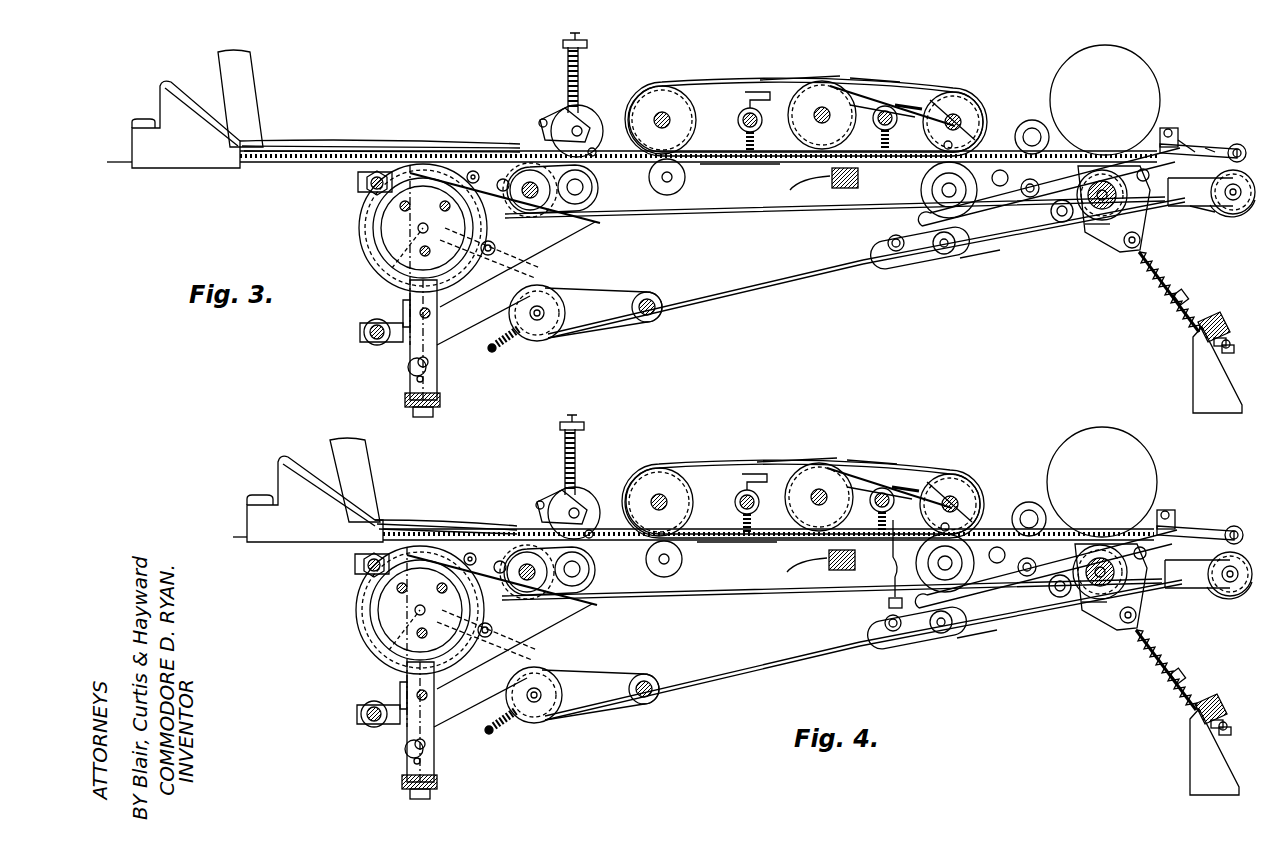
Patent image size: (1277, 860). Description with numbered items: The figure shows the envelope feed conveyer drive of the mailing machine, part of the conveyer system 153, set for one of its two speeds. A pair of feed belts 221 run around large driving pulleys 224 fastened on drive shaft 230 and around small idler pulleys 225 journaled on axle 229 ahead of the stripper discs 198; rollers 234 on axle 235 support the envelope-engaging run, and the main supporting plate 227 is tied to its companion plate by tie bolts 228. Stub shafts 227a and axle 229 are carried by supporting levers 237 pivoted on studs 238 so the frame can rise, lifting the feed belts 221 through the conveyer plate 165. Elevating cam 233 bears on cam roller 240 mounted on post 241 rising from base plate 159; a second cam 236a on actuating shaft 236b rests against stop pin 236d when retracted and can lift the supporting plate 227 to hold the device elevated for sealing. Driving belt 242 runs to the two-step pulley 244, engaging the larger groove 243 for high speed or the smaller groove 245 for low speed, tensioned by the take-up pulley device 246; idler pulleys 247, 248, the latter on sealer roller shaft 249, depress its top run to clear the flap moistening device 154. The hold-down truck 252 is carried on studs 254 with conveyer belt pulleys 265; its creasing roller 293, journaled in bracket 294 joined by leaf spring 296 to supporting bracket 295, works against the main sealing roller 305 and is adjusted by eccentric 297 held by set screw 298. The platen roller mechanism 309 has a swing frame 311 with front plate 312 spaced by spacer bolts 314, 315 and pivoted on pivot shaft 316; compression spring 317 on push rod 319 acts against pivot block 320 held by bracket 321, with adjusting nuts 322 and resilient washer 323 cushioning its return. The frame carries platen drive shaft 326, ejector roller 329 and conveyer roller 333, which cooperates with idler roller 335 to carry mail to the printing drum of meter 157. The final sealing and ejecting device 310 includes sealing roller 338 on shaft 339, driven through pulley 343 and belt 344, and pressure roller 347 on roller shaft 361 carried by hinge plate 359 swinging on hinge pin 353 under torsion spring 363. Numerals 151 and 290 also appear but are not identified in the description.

In FIG. 3, the sheet feeding mechanism 151 is at (412, 110).
In FIG. 4, the sheet feeding mechanism 151 is at (693, 459).
In FIG. 3, the conveyer system 153 is at (745, 80).
In FIG. 4, the conveyer system 153 is at (803, 462).
In FIG. 3, the envelope flap moistening device 154 is at (860, 190).
In FIG. 4, the envelope flap moistening device 154 is at (833, 584).
In FIG. 3, the meter 157 is at (1147, 66).
In FIG. 4, the meter 157 is at (1102, 482).
In FIG. 3, the main base plate 159 is at (441, 397).
In FIG. 4, the main base plate 159 is at (443, 778).
In FIG. 3, the envelope conveyer plate 165 is at (737, 165).
In FIG. 4, the envelope conveyer plate 165 is at (737, 565).
In FIG. 3, the stripper discs 198 is at (586, 120).
In FIG. 4, the stripper discs 198 is at (580, 477).
In FIG. 3, the feed belts 221 is at (360, 250).
In FIG. 4, the feed belts 221 is at (730, 610).
In FIG. 3, the large driving pulleys 224 is at (365, 226).
In FIG. 4, the large driving pulleys 224 is at (384, 610).
In FIG. 3, the small idler pulleys 225 is at (593, 186).
In FIG. 4, the small idler pulleys 225 is at (599, 569).
In FIG. 3, the main supporting plate 227 is at (548, 235).
In FIG. 4, the main supporting plate 227 is at (513, 590).
In FIG. 3, the stub shafts 227a is at (470, 172).
In FIG. 4, the stub shafts 227a is at (455, 526).
In FIG. 3, the tie bolts 228 is at (508, 264).
In FIG. 4, the tie bolts 228 is at (481, 672).
In FIG. 3, the axle 229 is at (598, 205).
In FIG. 4, the axle 229 is at (581, 586).
In FIG. 3, the drive shaft 230 is at (423, 224).
In FIG. 4, the drive shaft 230 is at (420, 637).
In FIG. 3, the elevating cam 233 is at (392, 268).
In FIG. 4, the elevating cam 233 is at (365, 638).
In FIG. 3, the rollers 234 is at (497, 180).
In FIG. 4, the rollers 234 is at (495, 521).
In FIG. 3, the axle 235 is at (510, 181).
In FIG. 4, the axle 235 is at (525, 548).
In FIG. 3, the elevating cam 236a is at (410, 368).
In FIG. 4, the elevating cam 236a is at (373, 760).
In FIG. 3, the actuating shaft 236b is at (430, 363).
In FIG. 4, the actuating shaft 236b is at (456, 749).
In FIG. 3, the stop pin 236d is at (413, 386).
In FIG. 4, the stop pin 236d is at (372, 779).
In FIG. 3, the supporting levers 237 is at (358, 178).
In FIG. 4, the supporting levers 237 is at (470, 642).
In FIG. 3, the studs 238 is at (366, 186).
In FIG. 4, the studs 238 is at (407, 640).
In FIG. 3, the cam roller 240 is at (408, 298).
In FIG. 4, the cam roller 240 is at (376, 722).
In FIG. 3, the post 241 is at (440, 347).
In FIG. 4, the post 241 is at (480, 704).
In FIG. 3, the driving belt 242 is at (795, 294).
In FIG. 4, the driving belt 242 is at (702, 681).
In FIG. 4, the larger diameter groove 243 is at (1071, 623).
In FIG. 3, the two-step pulley 244 is at (1100, 227).
In FIG. 4, the two-step pulley 244 is at (1100, 643).
In FIG. 3, the smaller diameter groove 245 is at (1062, 223).
In FIG. 3, the take-up pulley device 246 is at (552, 300).
In FIG. 4, the take-up pulley device 246 is at (582, 679).
In FIG. 3, the idler pulley 247 is at (560, 215).
In FIG. 4, the idler pulley 247 is at (514, 646).
In FIG. 3, the idler pulley 248 is at (962, 178).
In FIG. 4, the idler pulley 248 is at (975, 532).
In FIG. 3, the sealer roller shaft 249 is at (975, 212).
In FIG. 4, the sealer roller shaft 249 is at (1046, 573).
In FIG. 3, the hold-down truck mechanism 252 is at (840, 76).
In FIG. 4, the hold-down truck mechanism 252 is at (872, 420).
In FIG. 3, the studs 254 is at (740, 125).
In FIG. 4, the studs 254 is at (793, 510).
In FIG. 3, the conveyer belt pulleys 265 is at (797, 82).
In FIG. 4, the conveyer belt pulleys 265 is at (797, 438).
In FIG. 3, the roller 290 is at (686, 181).
In FIG. 4, the roller 290 is at (682, 561).
In FIG. 3, the creasing roller 293 is at (985, 105).
In FIG. 4, the creasing roller 293 is at (964, 482).
In FIG. 3, the bracket 294 is at (935, 108).
In FIG. 4, the bracket 294 is at (926, 459).
In FIG. 3, the supporting bracket 295 is at (745, 100).
In FIG. 4, the supporting bracket 295 is at (734, 484).
In FIG. 3, the leaf spring 296 is at (870, 100).
In FIG. 4, the leaf spring 296 is at (889, 465).
In FIG. 3, the eccentric 297 is at (905, 108).
In FIG. 4, the eccentric 297 is at (890, 450).
In FIG. 3, the set screw 298 is at (858, 114).
In FIG. 4, the set screw 298 is at (820, 497).
In FIG. 3, the main sealing roller 305 is at (920, 192).
In FIG. 4, the main sealing roller 305 is at (911, 564).
In FIG. 3, the platen roller mechanism 309 is at (1040, 255).
In FIG. 4, the platen roller mechanism 309 is at (1021, 648).
In FIG. 3, the final sealing and ejecting device 310 is at (1215, 222).
In FIG. 4, the final sealing and ejecting device 310 is at (1230, 616).
In FIG. 3, the swing frame 311 is at (985, 260).
In FIG. 4, the swing frame 311 is at (980, 658).
In FIG. 3, the front plate 312 is at (915, 265).
In FIG. 4, the front plate 312 is at (969, 648).
In FIG. 3, the spacer bolt 314 is at (945, 256).
In FIG. 4, the spacer bolt 314 is at (940, 651).
In FIG. 3, the spacer bolt 315 is at (1130, 249).
In FIG. 4, the spacer bolt 315 is at (1125, 636).
In FIG. 3, the pivot shaft 316 is at (888, 246).
In FIG. 4, the pivot shaft 316 is at (876, 645).
In FIG. 3, the compression spring 317 is at (1170, 290).
In FIG. 4, the compression spring 317 is at (1156, 670).
In FIG. 3, the push rod 319 is at (1186, 296).
In FIG. 4, the push rod 319 is at (1223, 679).
In FIG. 3, the pivot block 320 is at (1212, 322).
In FIG. 4, the pivot block 320 is at (1217, 685).
In FIG. 3, the bracket 321 is at (1195, 370).
In FIG. 4, the bracket 321 is at (1190, 752).
In FIG. 3, the adjusting nuts 322 is at (1229, 344).
In FIG. 4, the adjusting nuts 322 is at (1248, 708).
In FIG. 3, the resilient washer 323 is at (1224, 336).
In FIG. 4, the resilient washer 323 is at (1240, 697).
In FIG. 3, the platen drive shaft 326 is at (1130, 176).
In FIG. 4, the platen drive shaft 326 is at (1068, 587).
In FIG. 3, the ejector roller 329 is at (1103, 170).
In FIG. 4, the ejector roller 329 is at (1100, 572).
In FIG. 4, the conveyer roller 333 is at (1058, 531).
In FIG. 3, the idler roller 335 is at (1048, 130).
In FIG. 4, the idler roller 335 is at (1029, 519).
In FIG. 3, the sealing roller 338 is at (1200, 181).
In FIG. 3, the shaft 339 is at (1200, 206).
In FIG. 3, the driven pulley 343 is at (1230, 212).
In FIG. 3, the belt 344 is at (1192, 213).
In FIG. 3, the pressure roller 347 is at (1185, 155).
In FIG. 3, the hinge pin 353 is at (1178, 132).
In FIG. 3, the hinge plate 359 is at (1215, 150).
In FIG. 3, the roller shaft 361 is at (1243, 148).
In FIG. 3, the torsion spring 363 is at (1185, 148).